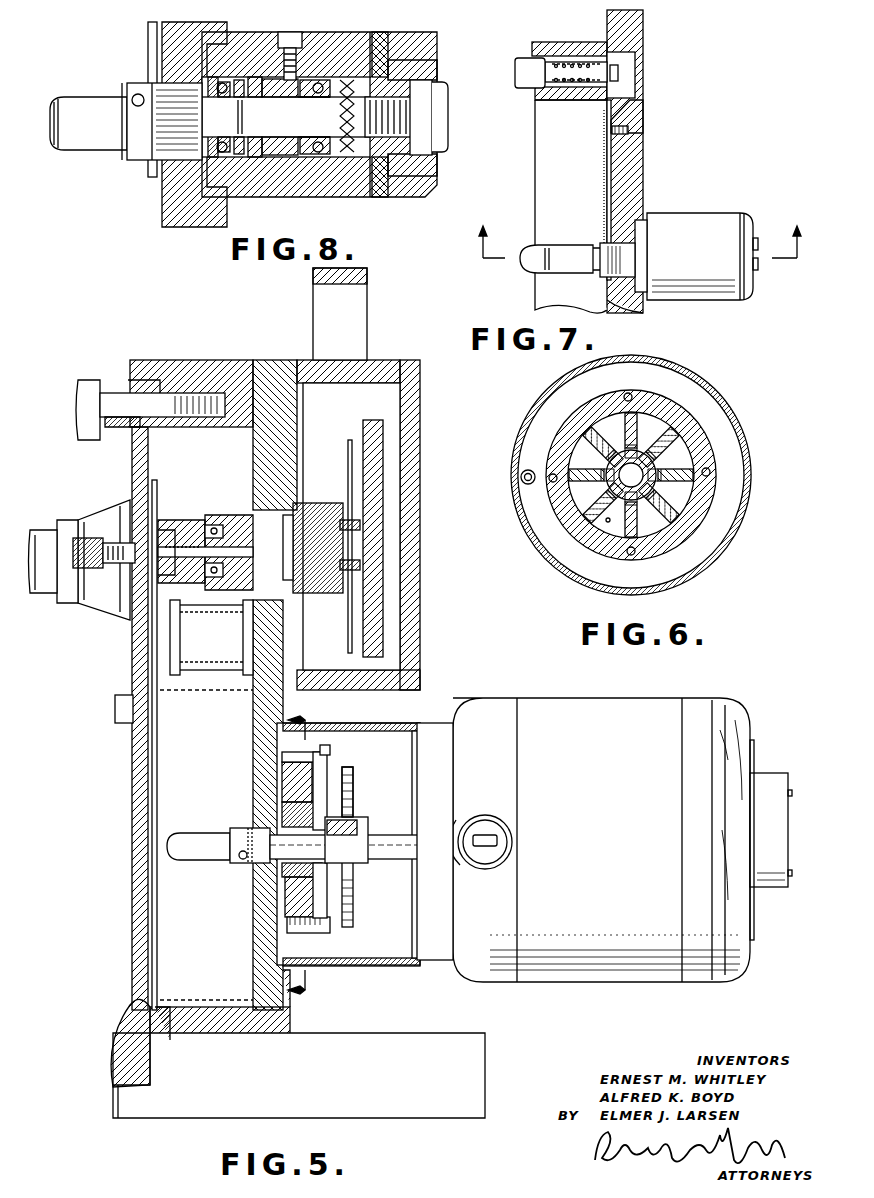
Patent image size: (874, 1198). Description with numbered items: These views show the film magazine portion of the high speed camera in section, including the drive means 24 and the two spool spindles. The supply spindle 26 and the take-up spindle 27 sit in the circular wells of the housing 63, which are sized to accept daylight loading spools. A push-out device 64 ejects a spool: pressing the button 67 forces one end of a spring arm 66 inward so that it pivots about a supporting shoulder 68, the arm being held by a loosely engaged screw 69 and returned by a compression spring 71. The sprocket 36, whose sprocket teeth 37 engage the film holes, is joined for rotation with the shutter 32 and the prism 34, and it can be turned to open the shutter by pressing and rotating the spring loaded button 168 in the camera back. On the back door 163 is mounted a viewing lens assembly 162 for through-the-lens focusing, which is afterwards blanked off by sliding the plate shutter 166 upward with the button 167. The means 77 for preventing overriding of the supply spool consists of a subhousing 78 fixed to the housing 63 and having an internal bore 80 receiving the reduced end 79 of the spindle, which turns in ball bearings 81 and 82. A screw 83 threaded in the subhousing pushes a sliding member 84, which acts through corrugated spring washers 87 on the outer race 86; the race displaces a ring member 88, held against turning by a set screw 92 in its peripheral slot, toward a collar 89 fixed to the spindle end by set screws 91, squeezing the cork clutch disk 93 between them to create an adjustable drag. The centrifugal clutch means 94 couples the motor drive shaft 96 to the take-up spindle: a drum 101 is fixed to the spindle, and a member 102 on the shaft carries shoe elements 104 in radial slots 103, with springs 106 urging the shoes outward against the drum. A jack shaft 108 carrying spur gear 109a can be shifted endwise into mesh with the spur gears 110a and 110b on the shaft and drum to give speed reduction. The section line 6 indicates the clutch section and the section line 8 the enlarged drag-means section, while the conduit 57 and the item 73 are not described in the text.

In FIG. 5, the section line 6- 6 is at (301, 854).
In FIG. 7, the section line 8- 8 is at (639, 233).
In FIG. 5, the drive means 24 is at (721, 696).
In FIG. 8, the film supply spindle 26 is at (62, 98).
In FIG. 7, the film supply spindle 26 is at (556, 246).
In FIG. 5, the take-up spindle 27 is at (195, 860).
In FIG. 5, the shutter 32 is at (344, 451).
In FIG. 5, the prism 34 is at (298, 503).
In FIG. 5, the sprocket 36 is at (196, 518).
In FIG. 5, the sprocket teeth 37 is at (187, 518).
In FIG. 5, the conduit 57 is at (375, 360).
In FIG. 8, the housing 63 is at (168, 212).
In FIG. 7, the housing 63 is at (630, 30).
In FIG. 5, the housing 63 is at (187, 360).
In FIG. 7, the push-out device 64 is at (600, 193).
In FIG. 8, the spring arm 66 is at (148, 40).
In FIG. 7, the spring arm 66 is at (604, 158).
In FIG. 7, the button 67 is at (515, 71).
In FIG. 7, the supporting shoulder 68 is at (627, 120).
In FIG. 7, the screw 69 is at (630, 130).
In FIG. 7, the compression spring 71 is at (575, 58).
In FIG. 5, the solenoid 73 is at (211, 637).
In FIG. 8, the means for preventing overriding 77 is at (380, 28).
In FIG. 7, the means for preventing overriding 77 is at (724, 212).
In FIG. 8, the subhousing 78 is at (222, 38).
In FIG. 7, the subhousing 78 is at (658, 218).
In FIG. 8, the reduced end 79 is at (286, 117).
In FIG. 8, the internal bore 80 is at (256, 80).
In FIG. 8, the ball bearing 81 is at (218, 135).
In FIG. 8, the ball bearing 82 is at (322, 150).
In FIG. 8, the screw 83 is at (445, 125).
In FIG. 8, the sliding member 84 is at (400, 64).
In FIG. 8, the outer race 86 is at (347, 78).
In FIG. 8, the corrugated spring washers 87 is at (395, 36).
In FIG. 8, the ring member 88 is at (283, 157).
In FIG. 8, the collar 89 is at (238, 102).
In FIG. 8, the set screw 91 is at (254, 105).
In FIG. 8, the set screw 92 is at (296, 32).
In FIG. 8, the clutch disk 93 is at (270, 160).
In FIG. 6, the centrifugal clutch means 94 is at (722, 428).
In FIG. 5, the centrifugal clutch means 94 is at (310, 935).
In FIG. 6, the motor drive shaft 96 is at (640, 470).
In FIG. 5, the motor drive shaft 96 is at (393, 838).
In FIG. 6, the drum 101 is at (705, 500).
In FIG. 5, the drum 101 is at (295, 930).
In FIG. 6, the member 102 is at (680, 545).
In FIG. 5, the member 102 is at (353, 890).
In FIG. 6, the radial slots 103 is at (620, 540).
In FIG. 6, the shoe elements 104 is at (590, 520).
In FIG. 5, the shoe elements 104 is at (292, 778).
In FIG. 6, the springs 106 is at (590, 470).
In FIG. 5, the springs 106 is at (295, 805).
In FIG. 6, the jack shaft 108 is at (518, 482).
In FIG. 5, the spur gear 109a is at (354, 775).
In FIG. 5, the spur gear 110a is at (357, 863).
In FIG. 5, the spur gear 110b is at (326, 752).
In FIG. 5, the viewing lens assembly 162 is at (38, 530).
In FIG. 5, the back door 163 is at (135, 815).
In FIG. 5, the plate shutter 166 is at (160, 724).
In FIG. 5, the button 167 is at (116, 722).
In FIG. 5, the spring loaded button 168 is at (90, 570).